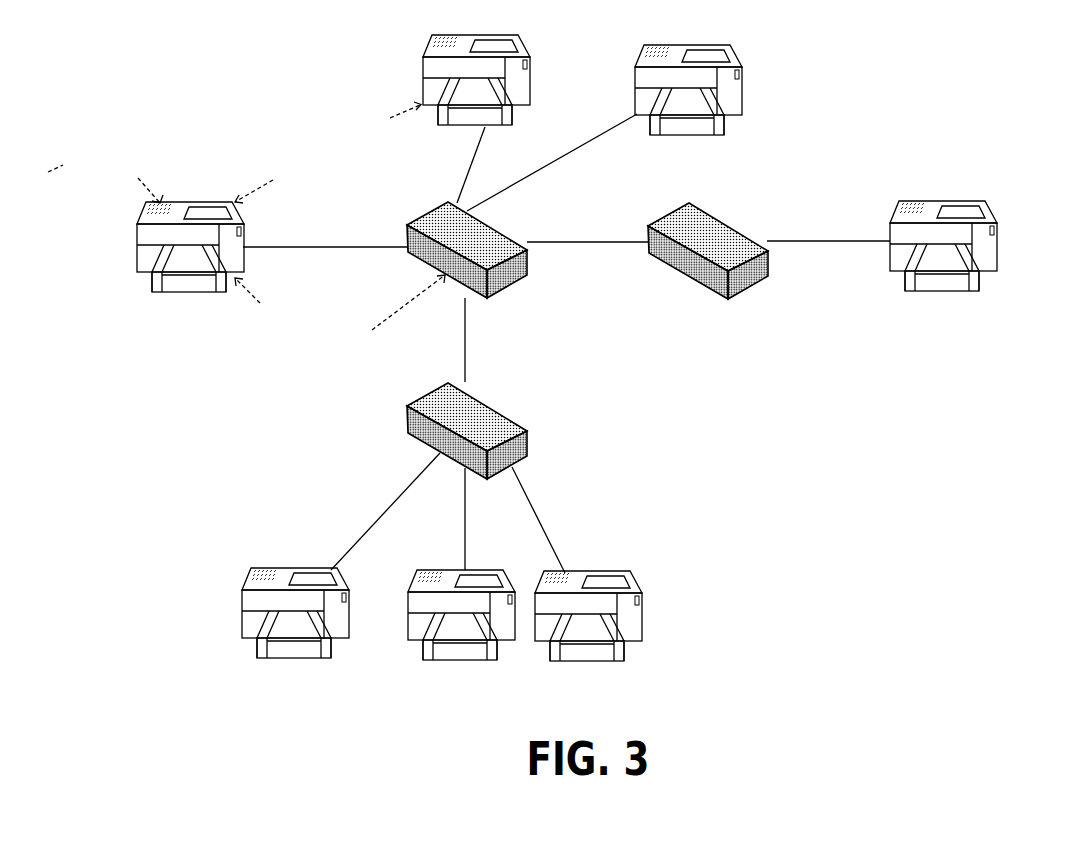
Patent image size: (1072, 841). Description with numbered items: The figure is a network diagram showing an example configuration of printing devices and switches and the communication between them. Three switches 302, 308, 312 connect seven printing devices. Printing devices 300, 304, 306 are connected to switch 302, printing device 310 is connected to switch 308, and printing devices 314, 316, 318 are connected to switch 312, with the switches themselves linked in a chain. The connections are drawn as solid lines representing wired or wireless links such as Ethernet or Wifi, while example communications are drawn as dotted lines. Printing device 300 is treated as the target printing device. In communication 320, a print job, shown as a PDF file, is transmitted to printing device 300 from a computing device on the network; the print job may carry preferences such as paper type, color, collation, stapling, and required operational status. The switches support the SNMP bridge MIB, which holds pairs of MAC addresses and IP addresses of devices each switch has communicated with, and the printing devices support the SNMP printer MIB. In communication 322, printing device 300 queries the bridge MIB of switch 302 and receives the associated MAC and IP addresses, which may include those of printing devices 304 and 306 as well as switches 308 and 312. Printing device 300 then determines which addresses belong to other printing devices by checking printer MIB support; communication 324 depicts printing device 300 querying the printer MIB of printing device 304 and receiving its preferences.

The printing device 300 is at (137, 240).
The switch 302 is at (417, 258).
The printing device 304 is at (423, 58).
The printing device 306 is at (742, 85).
The switch 308 is at (655, 261).
The printing device 310 is at (997, 245).
The switch 312 is at (405, 423).
The printing device 314 is at (242, 605).
The printing device 316 is at (408, 605).
The printing device 318 is at (642, 615).
The communication 320 is at (105, 172).
The communication 322 is at (340, 321).
The communication 324 is at (314, 161).